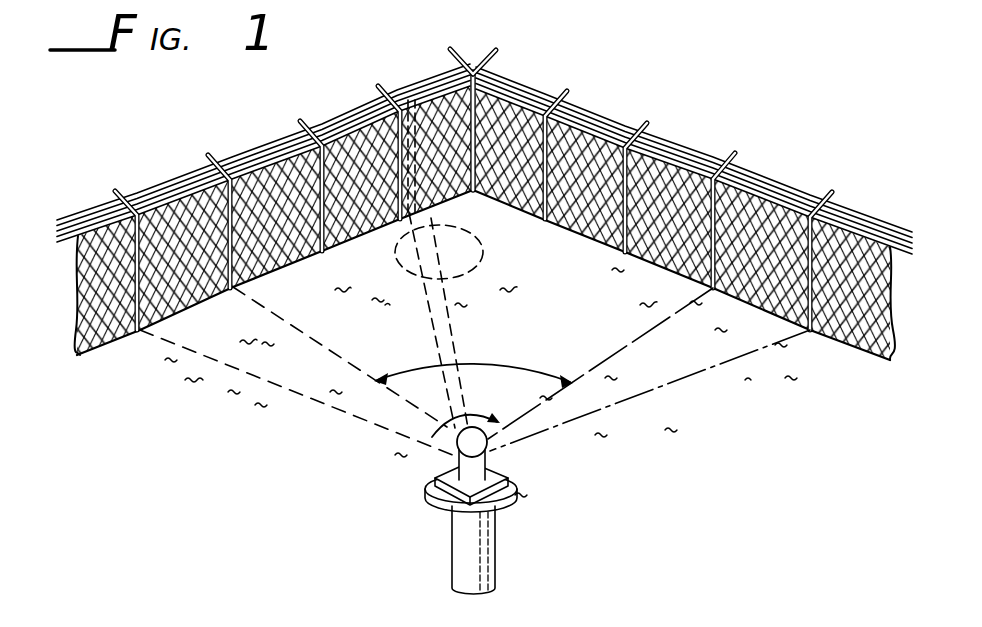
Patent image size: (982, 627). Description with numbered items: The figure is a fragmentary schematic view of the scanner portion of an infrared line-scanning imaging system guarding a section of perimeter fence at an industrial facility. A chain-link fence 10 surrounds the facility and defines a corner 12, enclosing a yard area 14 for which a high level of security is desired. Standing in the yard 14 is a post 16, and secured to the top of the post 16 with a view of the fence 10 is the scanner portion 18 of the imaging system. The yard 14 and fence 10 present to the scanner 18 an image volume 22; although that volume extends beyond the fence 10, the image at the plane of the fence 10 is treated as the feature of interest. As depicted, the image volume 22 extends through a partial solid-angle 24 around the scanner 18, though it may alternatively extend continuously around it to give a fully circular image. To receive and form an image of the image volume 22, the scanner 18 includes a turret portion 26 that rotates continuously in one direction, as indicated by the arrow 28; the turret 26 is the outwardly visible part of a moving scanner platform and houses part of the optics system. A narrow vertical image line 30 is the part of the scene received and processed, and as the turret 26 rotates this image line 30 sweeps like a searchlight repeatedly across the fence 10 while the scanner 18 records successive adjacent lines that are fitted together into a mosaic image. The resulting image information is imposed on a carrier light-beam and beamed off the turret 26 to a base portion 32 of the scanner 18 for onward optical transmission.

The fence 10 is at (267, 163).
The corner 12 is at (481, 170).
The yard area 14 is at (174, 383).
The post 16 is at (458, 556).
The scanner portion 18 is at (535, 487).
The image volume 22 is at (463, 258).
The partial solid-angle 24 is at (497, 364).
The turret portion 26 is at (482, 463).
The arrow 28 is at (445, 420).
The image line 30 is at (428, 75).
The base portion 32 is at (503, 488).